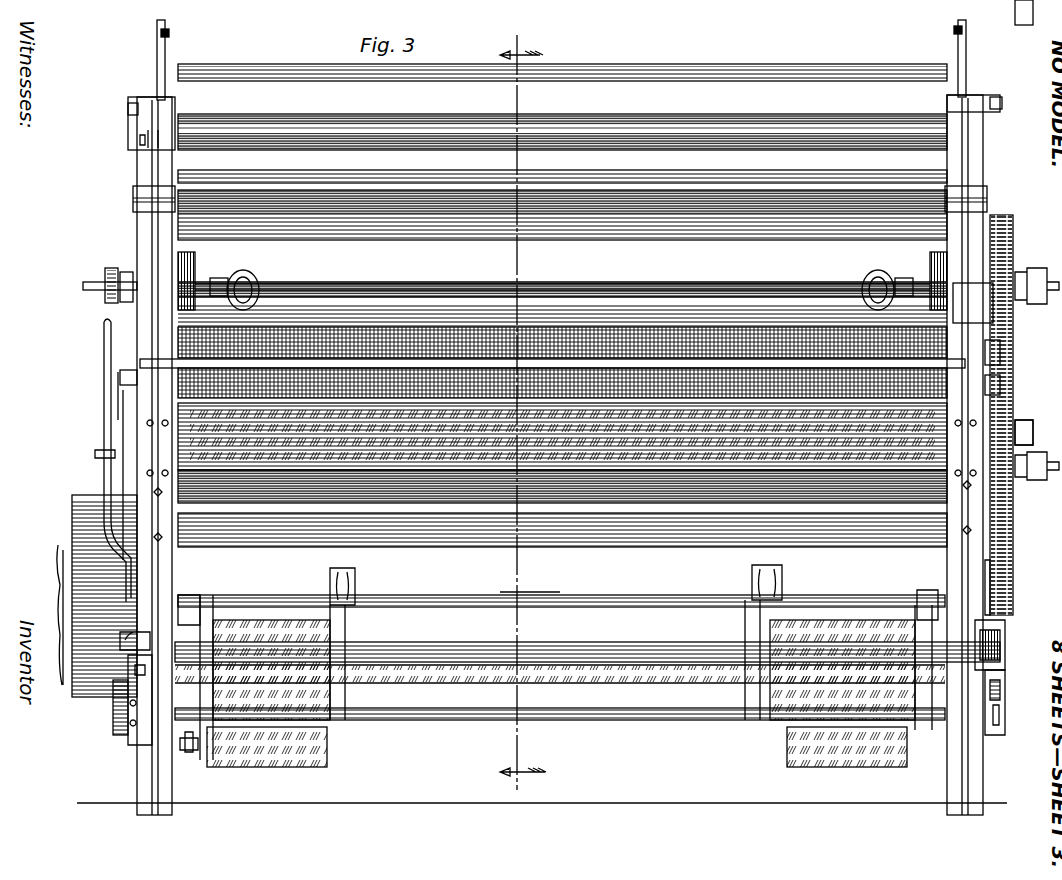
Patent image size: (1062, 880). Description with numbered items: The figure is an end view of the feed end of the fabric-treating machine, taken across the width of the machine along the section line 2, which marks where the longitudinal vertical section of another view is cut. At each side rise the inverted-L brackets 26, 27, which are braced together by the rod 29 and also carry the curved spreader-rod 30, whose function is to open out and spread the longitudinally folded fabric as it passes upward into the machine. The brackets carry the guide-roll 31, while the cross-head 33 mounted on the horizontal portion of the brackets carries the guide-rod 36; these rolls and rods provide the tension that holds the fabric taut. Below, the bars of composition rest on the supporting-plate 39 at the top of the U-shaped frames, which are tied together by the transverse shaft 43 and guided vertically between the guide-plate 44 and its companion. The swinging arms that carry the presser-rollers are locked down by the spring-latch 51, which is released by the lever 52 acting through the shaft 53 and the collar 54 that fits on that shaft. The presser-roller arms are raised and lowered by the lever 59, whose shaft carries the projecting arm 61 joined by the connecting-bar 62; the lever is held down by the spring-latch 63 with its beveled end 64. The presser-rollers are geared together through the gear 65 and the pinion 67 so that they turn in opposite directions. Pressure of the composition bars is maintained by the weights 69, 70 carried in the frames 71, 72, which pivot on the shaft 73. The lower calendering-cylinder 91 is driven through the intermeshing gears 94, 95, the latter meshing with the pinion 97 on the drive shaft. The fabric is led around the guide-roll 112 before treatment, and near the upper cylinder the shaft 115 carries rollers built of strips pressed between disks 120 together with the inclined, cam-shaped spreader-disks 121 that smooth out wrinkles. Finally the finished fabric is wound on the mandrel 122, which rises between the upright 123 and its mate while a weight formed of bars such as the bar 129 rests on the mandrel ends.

The section line 2 2 is at (523, 409).
The bracket 26 is at (150, 239).
The bracket 27 is at (965, 235).
The rod 29 is at (970, 203).
The spreader-rod 30 is at (600, 200).
The guide-roll 31 is at (258, 128).
The cross-head 33 is at (178, 92).
The guide-rod 36 is at (240, 70).
The supporting-plate 39 is at (362, 490).
The transverse shaft 43 is at (597, 610).
The guide-plate 44 is at (635, 448).
The spring-latch 51 is at (130, 376).
The lever 52 is at (130, 310).
The shaft 53 is at (865, 352).
The collar 54 is at (140, 364).
The lever 59 is at (128, 572).
The projecting arm 61 is at (115, 710).
The connecting-bar 62 is at (130, 490).
The spring-latch 63 is at (118, 700).
The beveled end 64 is at (133, 640).
The gear 65 is at (1000, 385).
The pinion 67 is at (1033, 432).
The weight 69 is at (297, 757).
The weight 70 is at (840, 752).
The frame 71 is at (272, 700).
The frame 72 is at (830, 700).
The shaft 73 is at (528, 590).
The lower calendering-cylinder 91 is at (690, 535).
The gear 94 is at (1013, 240).
The gear 95 is at (1013, 512).
The pinion 97 is at (1013, 588).
The guide-roll 112 is at (275, 508).
The shaft 115 is at (365, 278).
The disk 120 is at (188, 262).
The spreader-disk 121 is at (258, 278).
The mandrel 122 is at (360, 125).
The upright 123 is at (168, 50).
The bar 129 is at (169, 33).